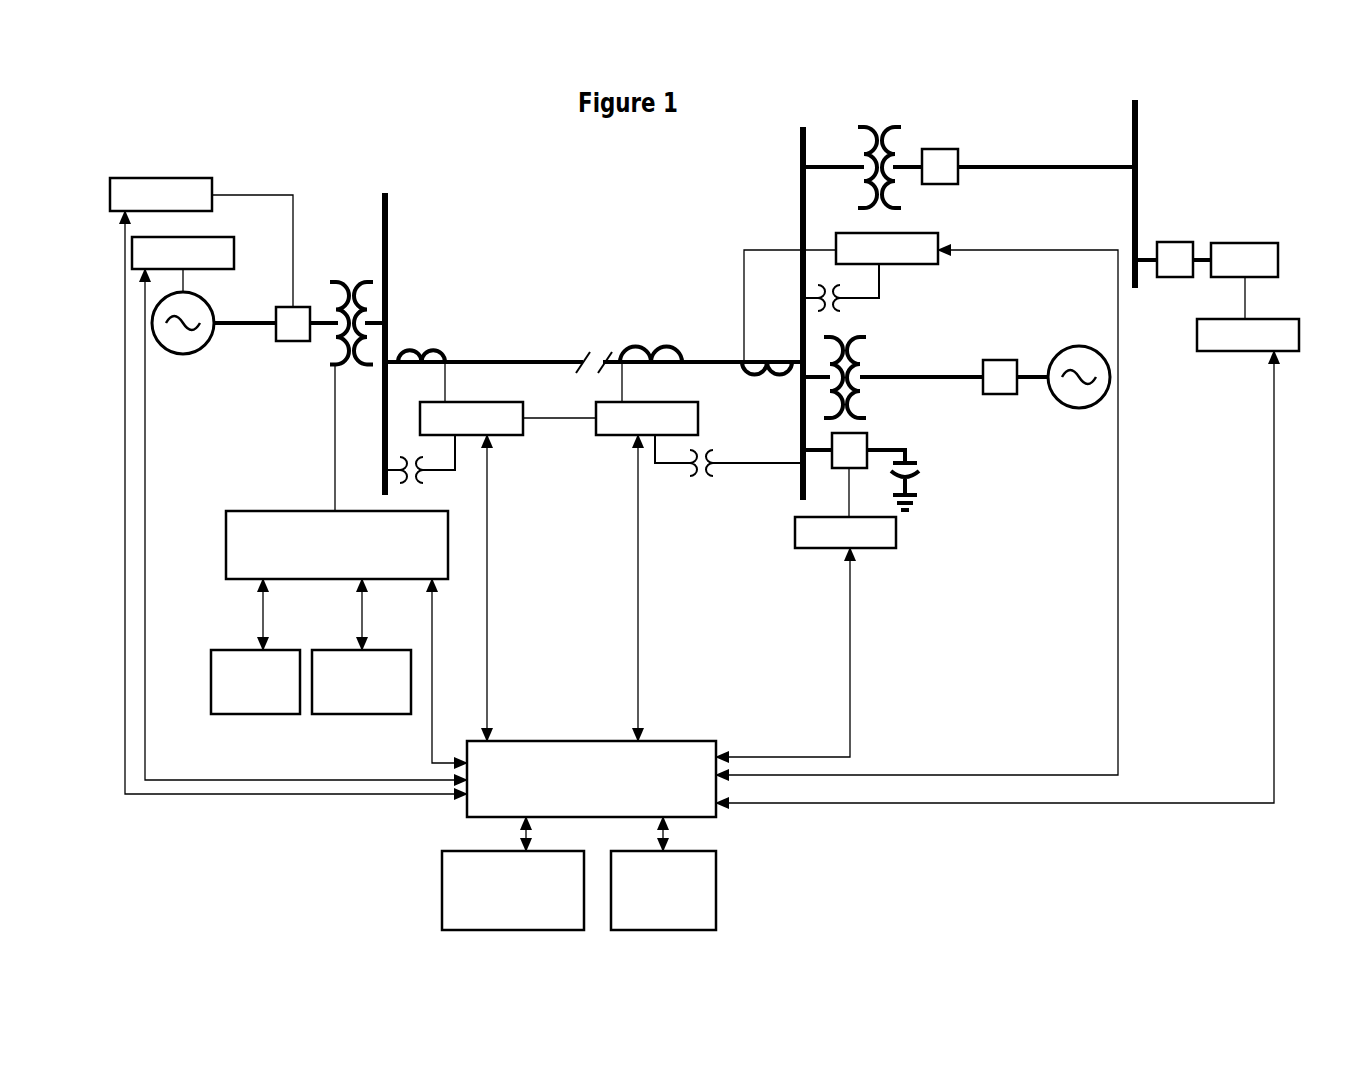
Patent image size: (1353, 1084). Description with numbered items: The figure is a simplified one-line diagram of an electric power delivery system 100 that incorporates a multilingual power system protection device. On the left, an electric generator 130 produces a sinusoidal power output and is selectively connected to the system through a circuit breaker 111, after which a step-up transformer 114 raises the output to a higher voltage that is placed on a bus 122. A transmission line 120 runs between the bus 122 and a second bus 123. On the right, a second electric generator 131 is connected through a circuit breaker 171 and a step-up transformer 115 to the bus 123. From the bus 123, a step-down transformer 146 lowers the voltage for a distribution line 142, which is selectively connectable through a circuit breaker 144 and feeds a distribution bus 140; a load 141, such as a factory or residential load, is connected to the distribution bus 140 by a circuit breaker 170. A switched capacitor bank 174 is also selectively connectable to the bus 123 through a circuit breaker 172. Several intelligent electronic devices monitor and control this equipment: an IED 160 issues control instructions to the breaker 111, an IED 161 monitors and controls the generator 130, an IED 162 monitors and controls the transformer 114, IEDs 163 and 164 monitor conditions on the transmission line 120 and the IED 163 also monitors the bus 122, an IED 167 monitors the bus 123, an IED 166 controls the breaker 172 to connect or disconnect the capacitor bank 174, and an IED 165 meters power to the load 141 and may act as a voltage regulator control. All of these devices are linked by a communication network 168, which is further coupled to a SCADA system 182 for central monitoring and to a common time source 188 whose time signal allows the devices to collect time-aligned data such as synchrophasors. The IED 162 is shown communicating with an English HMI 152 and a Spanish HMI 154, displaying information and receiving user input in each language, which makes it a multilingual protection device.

The electric power delivery system 100 is at (470, 170).
The circuit breaker 111 is at (290, 342).
The step-up transformer 114 is at (360, 282).
The step-up transformer 115 is at (866, 337).
The transmission line 120 is at (470, 362).
The bus 122 is at (388, 222).
The bus 123 is at (798, 480).
The electric generator 130 is at (203, 298).
The electric generator 131 is at (1072, 408).
The distribution bus 140 is at (1138, 178).
The load 141 is at (1245, 243).
The distribution line 142 is at (1030, 165).
The circuit breaker 144 is at (940, 149).
The step-down transformer 146 is at (880, 127).
The English HMI 152 is at (230, 715).
The Spanish HMI 154 is at (352, 715).
The IED 160 is at (175, 178).
The IED 161 is at (215, 237).
The IED 162 is at (310, 511).
The IED 163 is at (505, 436).
The IED 164 is at (625, 436).
The IED 165 is at (1203, 352).
The IED 166 is at (795, 520).
The IED 167 is at (885, 232).
The communication network 168 is at (591, 796).
The circuit breaker 170 is at (1175, 242).
The circuit breaker 171 is at (1000, 360).
The circuit breaker 172 is at (860, 433).
The switched capacitor bank 174 is at (910, 463).
The SCADA system 182 is at (442, 905).
The common time source 188 is at (718, 900).